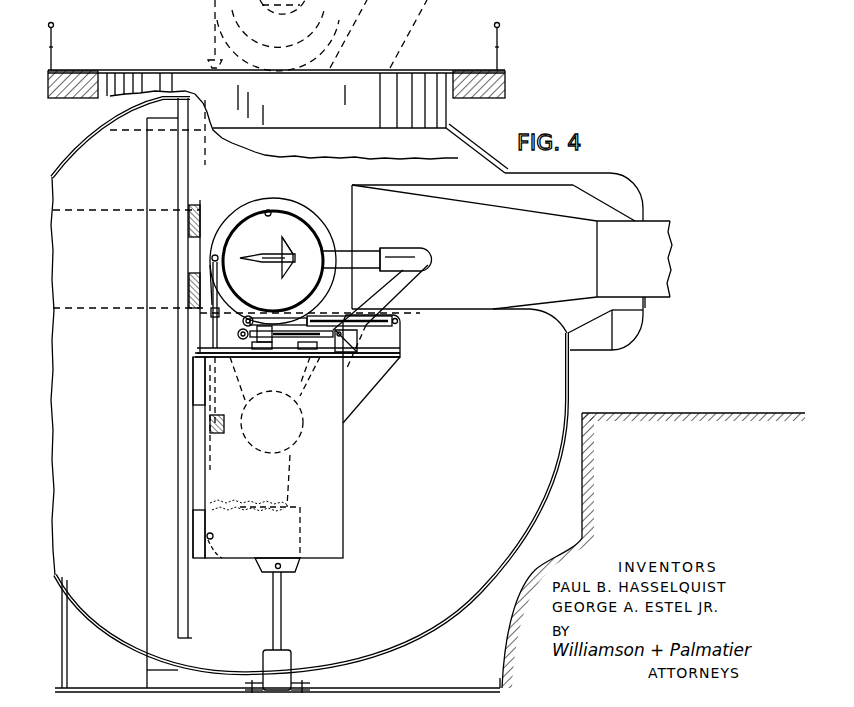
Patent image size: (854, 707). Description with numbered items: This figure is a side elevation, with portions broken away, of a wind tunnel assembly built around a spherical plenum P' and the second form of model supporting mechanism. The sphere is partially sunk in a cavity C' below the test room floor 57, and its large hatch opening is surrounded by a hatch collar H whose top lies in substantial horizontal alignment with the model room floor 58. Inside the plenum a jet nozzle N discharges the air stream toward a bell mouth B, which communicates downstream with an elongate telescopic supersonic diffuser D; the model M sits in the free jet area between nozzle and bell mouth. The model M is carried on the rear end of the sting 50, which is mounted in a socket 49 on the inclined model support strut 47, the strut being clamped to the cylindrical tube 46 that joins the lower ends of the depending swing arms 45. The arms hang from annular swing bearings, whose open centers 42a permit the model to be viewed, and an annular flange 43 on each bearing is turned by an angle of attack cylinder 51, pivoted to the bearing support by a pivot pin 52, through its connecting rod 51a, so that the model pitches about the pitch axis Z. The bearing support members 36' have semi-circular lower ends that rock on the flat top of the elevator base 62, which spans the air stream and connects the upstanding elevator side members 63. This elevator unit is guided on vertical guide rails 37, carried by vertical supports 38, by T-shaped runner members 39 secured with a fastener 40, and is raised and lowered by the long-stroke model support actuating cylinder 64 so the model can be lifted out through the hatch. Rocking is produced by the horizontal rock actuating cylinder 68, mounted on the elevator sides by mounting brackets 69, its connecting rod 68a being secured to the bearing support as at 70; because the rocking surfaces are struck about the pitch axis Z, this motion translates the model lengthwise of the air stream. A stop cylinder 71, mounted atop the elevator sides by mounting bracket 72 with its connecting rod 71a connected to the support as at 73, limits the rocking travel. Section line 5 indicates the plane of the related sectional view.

The section line 5 is at (460, 60).
The bearing support member 36' is at (307, 480).
The guide rail 37 is at (190, 630).
The vertical support 38 is at (150, 445).
The runner member 39 is at (196, 372).
The fastener 40 is at (214, 538).
The open center 42a is at (268, 210).
The annular flange 43 is at (308, 224).
The swing arm 45 is at (265, 413).
The cylindrical tube 46 is at (262, 458).
The model support strut 47 is at (410, 290).
The socket 49 is at (414, 252).
The sting 50 is at (370, 252).
The angle of attack cylinder 51 is at (212, 336).
The connecting rod 51a is at (218, 280).
The pivot pin 52 is at (372, 433).
The test room floor 57 is at (702, 414).
The model room floor 58 is at (505, 78).
The supporting base member 62 is at (300, 546).
The elevator side member 63 is at (345, 490).
The model support actuating cylinder 64 is at (262, 662).
The rock actuating cylinder 68 is at (296, 350).
The connecting rod 68a is at (250, 345).
The mounting bracket 69 is at (351, 341).
The connection point 70 is at (240, 330).
The stop cylinder 71 is at (350, 318).
The connecting rod 71a is at (282, 318).
The mounting bracket 72 is at (397, 334).
The connection point 73 is at (272, 310).
The bell mouth B is at (428, 186).
The cavity C' is at (600, 490).
The supersonic diffuser D is at (664, 222).
The hatch collar H is at (148, 70).
The model M is at (284, 247).
The jet nozzle N is at (192, 238).
The plenum P' is at (483, 148).
The pitch axis Z is at (275, 256).